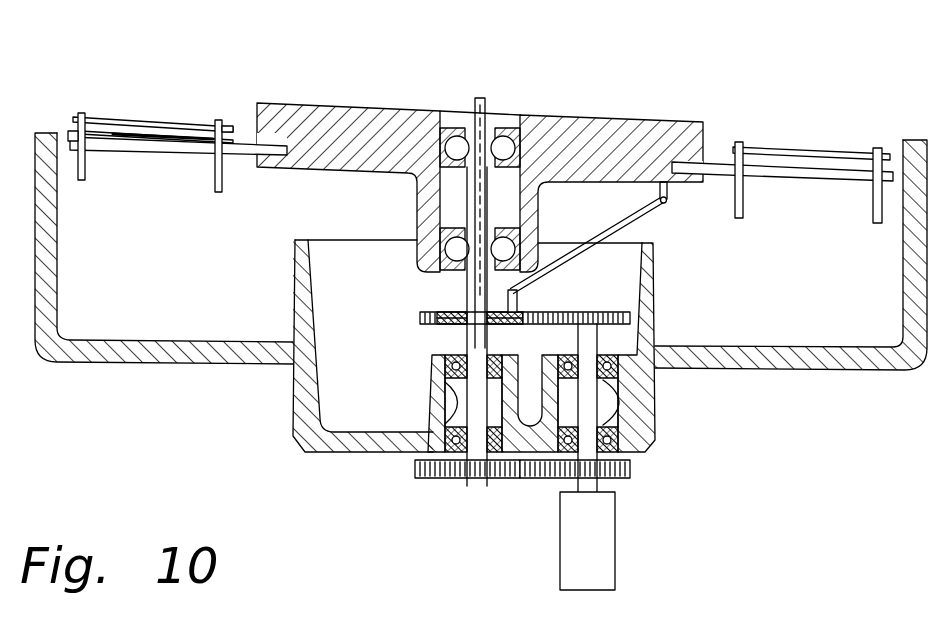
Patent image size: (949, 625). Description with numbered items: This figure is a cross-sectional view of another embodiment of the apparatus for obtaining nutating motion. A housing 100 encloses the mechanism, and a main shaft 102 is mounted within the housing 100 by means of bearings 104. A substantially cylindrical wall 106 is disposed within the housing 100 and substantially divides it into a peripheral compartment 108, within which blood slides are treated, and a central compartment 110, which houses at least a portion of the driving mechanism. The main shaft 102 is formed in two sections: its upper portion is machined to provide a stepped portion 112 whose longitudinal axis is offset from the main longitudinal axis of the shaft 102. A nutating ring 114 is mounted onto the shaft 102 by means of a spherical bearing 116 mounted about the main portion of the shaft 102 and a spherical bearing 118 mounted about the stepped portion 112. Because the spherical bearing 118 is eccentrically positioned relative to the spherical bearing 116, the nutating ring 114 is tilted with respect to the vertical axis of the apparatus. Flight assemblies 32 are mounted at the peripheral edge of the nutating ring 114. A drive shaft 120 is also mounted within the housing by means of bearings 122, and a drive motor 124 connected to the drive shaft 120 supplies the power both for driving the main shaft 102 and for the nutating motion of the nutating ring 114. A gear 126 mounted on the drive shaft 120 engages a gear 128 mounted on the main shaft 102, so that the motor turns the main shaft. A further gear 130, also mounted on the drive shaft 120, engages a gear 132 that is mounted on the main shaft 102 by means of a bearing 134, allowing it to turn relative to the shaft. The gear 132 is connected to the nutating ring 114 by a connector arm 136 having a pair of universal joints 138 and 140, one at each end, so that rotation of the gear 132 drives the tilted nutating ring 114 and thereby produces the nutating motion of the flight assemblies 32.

The flight assemblies 32 is at (148, 146).
The housing 100 is at (155, 362).
The main shaft 102 is at (462, 338).
The bearings 104 is at (455, 386).
The substantially cylindrical wall 106 is at (293, 260).
The peripheral compartment 108 is at (800, 337).
The central compartment 110 is at (352, 415).
The stepped portion 112 is at (483, 96).
The nutating ring 114 is at (648, 133).
The spherical bearing 116 is at (452, 232).
The spherical bearing 118 is at (497, 128).
The drive shaft 120 is at (598, 484).
The bearings 122 is at (640, 403).
The drive motor 124 is at (570, 558).
The gear 126 is at (630, 470).
The gear 128 is at (441, 479).
The gear 130 is at (619, 312).
The gear 132 is at (420, 316).
The bearing 134 is at (462, 308).
The connector arm 136 is at (625, 218).
The universal joint 138 is at (668, 202).
The universal joint 140 is at (518, 293).